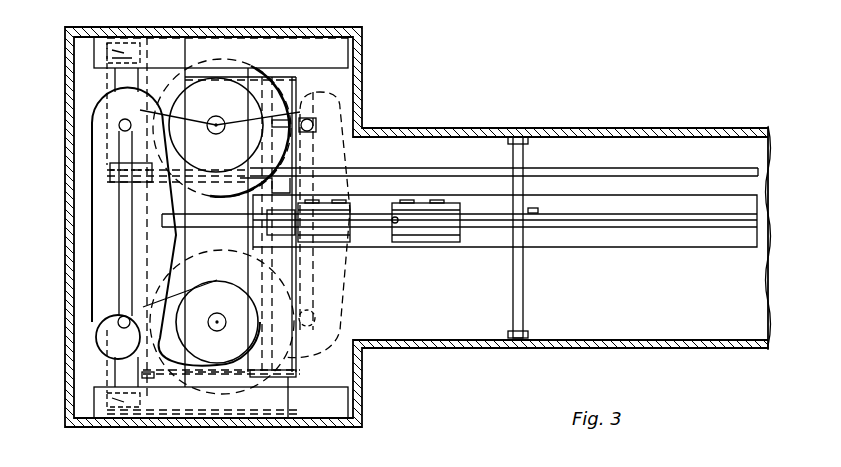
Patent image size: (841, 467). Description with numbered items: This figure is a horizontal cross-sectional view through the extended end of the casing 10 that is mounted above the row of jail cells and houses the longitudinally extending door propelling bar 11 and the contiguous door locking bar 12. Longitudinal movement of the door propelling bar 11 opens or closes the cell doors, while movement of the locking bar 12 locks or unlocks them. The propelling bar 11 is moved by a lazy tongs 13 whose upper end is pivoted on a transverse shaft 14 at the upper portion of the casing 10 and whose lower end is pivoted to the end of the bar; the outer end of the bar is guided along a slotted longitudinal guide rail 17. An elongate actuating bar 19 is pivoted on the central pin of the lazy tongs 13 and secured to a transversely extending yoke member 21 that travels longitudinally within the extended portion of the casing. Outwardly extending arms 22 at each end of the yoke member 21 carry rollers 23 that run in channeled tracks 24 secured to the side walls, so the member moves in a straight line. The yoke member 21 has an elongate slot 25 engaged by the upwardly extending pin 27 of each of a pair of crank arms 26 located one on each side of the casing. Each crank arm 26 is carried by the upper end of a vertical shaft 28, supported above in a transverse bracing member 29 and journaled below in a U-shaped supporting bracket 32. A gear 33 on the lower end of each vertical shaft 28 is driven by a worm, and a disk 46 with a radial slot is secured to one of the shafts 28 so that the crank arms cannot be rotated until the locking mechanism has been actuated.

The casing 10 is at (418, 227).
The door propelling bar 11 is at (459, 248).
The door locking bar 12 is at (432, 143).
The lazy tongs 13 is at (426, 243).
The transverse shaft 14 is at (543, 237).
The longitudinal guide rail 17 is at (505, 245).
The actuating bar 19 is at (348, 243).
The yoke member 21 is at (186, 227).
The arms 22 is at (78, 234).
The rollers 23 is at (105, 448).
The channeled tracks 24 is at (253, 227).
The elongate slot 25 is at (170, 223).
The crank arms 26 is at (218, 353).
The pin 27 is at (81, 337).
The vertical shaft 28 is at (159, 128).
The transverse bracing member 29 is at (221, 413).
The U-shaped supporting bracket 32 is at (327, 228).
The gear 33 is at (258, 377).
The disk 46 is at (280, 218).